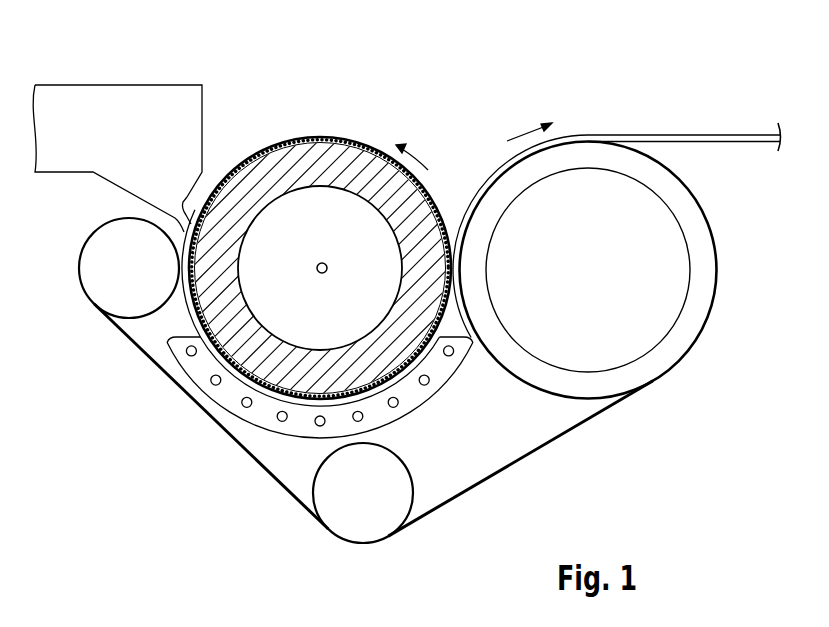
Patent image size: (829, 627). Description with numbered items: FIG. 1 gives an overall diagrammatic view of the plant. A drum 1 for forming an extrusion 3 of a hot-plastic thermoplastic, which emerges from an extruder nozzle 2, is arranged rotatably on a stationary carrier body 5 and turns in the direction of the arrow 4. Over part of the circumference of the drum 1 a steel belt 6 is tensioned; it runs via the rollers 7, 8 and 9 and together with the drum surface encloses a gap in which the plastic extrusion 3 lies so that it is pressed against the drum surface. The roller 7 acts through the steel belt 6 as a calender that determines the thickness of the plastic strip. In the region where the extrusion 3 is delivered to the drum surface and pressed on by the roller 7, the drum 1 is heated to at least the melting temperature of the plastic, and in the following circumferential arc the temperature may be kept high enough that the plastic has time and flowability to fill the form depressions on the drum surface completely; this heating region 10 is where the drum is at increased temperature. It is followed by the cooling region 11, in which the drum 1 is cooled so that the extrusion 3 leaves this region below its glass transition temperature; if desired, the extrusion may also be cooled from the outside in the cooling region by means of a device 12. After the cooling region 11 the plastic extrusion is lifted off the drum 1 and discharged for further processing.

The drum 1 is at (318, 136).
The extruder nozzle 2 is at (172, 95).
The extrusion 3 is at (205, 184).
The arrow 4 is at (430, 152).
The stationary carrier body 5 is at (363, 170).
The steel belt 6 is at (134, 346).
The roller 7 is at (98, 292).
The roller 8 is at (344, 526).
The roller 9 is at (668, 357).
The heating region 10 is at (210, 268).
The cooling region 11 is at (320, 372).
The device 12 is at (415, 395).